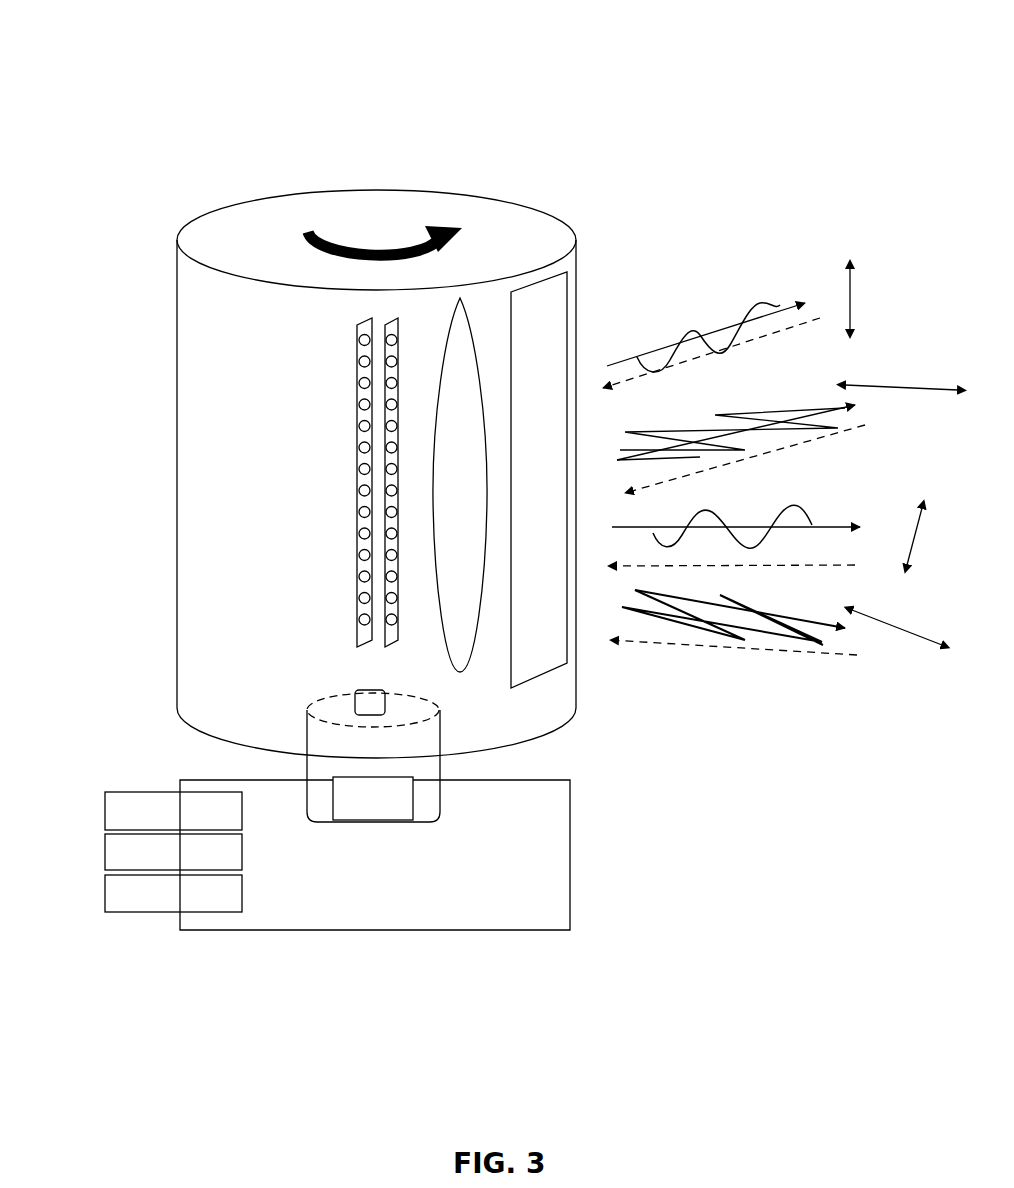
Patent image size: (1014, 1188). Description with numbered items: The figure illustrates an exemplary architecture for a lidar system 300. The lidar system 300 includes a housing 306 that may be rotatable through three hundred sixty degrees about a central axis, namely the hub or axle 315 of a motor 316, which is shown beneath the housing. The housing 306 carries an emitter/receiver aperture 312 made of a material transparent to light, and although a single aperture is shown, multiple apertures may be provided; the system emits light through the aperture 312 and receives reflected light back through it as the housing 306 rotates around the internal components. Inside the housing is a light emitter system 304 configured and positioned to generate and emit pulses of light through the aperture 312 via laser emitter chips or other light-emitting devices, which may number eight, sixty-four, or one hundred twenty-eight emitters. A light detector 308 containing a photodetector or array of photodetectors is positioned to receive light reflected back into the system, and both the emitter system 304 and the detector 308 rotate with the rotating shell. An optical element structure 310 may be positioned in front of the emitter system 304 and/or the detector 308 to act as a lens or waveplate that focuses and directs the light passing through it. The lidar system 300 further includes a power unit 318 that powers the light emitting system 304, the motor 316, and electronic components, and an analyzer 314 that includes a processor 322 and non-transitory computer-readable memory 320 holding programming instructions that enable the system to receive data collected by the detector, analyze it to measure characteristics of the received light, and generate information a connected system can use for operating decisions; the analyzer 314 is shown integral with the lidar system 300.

The lidar system 300 is at (140, 80).
The light emitter system 304 is at (390, 318).
The housing 306 is at (177, 297).
The light detector 308 is at (357, 322).
The optical element structure 310 is at (460, 298).
The emitter/receiver aperture 312 is at (567, 272).
The analyzer 314 is at (571, 848).
The hub or axle 315 is at (355, 690).
The motor 316 is at (313, 822).
The power unit 318 is at (105, 808).
The non-transitory computer-readable memory 320 is at (105, 850).
The processor 322 is at (105, 892).